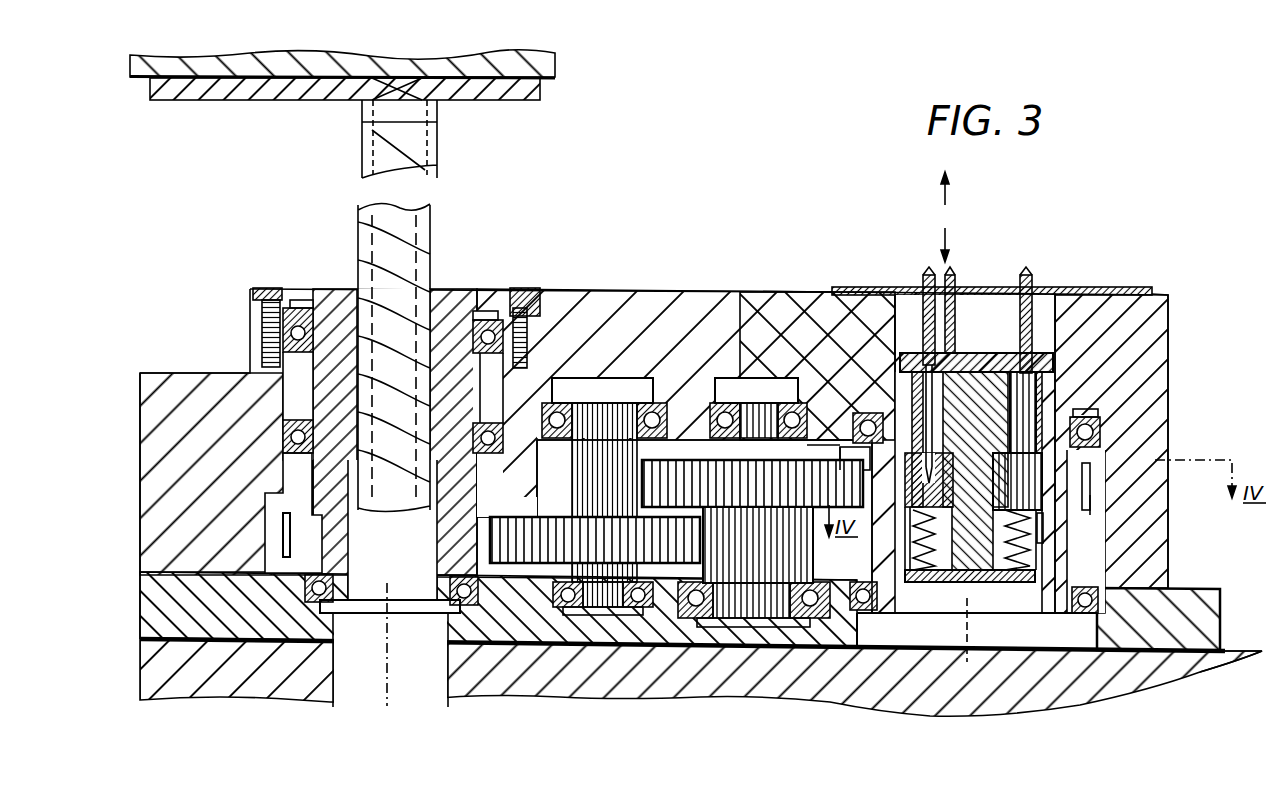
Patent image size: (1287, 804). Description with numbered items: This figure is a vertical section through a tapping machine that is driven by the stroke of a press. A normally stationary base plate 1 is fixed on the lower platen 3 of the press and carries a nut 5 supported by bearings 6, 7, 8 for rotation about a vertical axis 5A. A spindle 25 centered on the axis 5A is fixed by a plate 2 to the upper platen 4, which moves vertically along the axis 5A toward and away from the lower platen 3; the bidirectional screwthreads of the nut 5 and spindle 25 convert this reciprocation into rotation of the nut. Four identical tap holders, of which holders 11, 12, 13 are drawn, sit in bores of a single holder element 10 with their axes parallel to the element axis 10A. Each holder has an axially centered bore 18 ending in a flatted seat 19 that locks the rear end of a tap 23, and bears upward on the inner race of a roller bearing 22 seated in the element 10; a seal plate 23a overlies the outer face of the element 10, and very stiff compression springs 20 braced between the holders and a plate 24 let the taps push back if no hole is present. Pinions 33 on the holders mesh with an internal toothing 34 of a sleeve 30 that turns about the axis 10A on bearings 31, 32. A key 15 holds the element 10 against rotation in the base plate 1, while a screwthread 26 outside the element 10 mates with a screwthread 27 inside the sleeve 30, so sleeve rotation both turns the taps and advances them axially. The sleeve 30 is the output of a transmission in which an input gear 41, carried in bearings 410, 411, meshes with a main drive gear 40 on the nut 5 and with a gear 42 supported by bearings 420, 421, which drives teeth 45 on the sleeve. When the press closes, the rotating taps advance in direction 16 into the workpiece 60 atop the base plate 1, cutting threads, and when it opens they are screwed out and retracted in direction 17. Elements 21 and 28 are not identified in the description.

The base plate 1 is at (1150, 337).
The plate 2 is at (527, 93).
The lower platen 3 is at (1145, 670).
The upper platen 4 is at (548, 68).
The nut 5 is at (447, 540).
The vertical axis 5A is at (391, 690).
The bearing 6 is at (295, 322).
The bearing 7 is at (283, 438).
The bearing 8 is at (307, 597).
The holder element 10 is at (1063, 400).
The axis of holder element 10A is at (970, 632).
The tap holder 11 is at (898, 360).
The tap holder 12 is at (960, 350).
The tap holder 13 is at (1055, 370).
The key 15 is at (1170, 300).
The outward direction 16 is at (952, 197).
The retraction direction 17 is at (952, 232).
The axially centered bore 18 is at (912, 330).
The flatted seat 19 is at (963, 580).
The compression spring 20 is at (927, 575).
The ring 21 is at (1107, 480).
The roller bearing 22 is at (1103, 418).
The tap 23 is at (1028, 300).
The seal plate 23a is at (935, 378).
The plate 24 is at (915, 590).
The spindle 25 is at (440, 137).
The screwthread 26 is at (855, 418).
The screwthread 27 is at (812, 444).
The cylinder wall 28 is at (1045, 590).
The sleeve 30 is at (1065, 570).
The bearing 31 is at (1100, 454).
The bearing 32 is at (1150, 650).
The pinion 33 is at (857, 605).
The internal toothing 34 is at (1085, 530).
The main drive gear 40 is at (470, 540).
The input gear 41 is at (603, 550).
The gear 42 is at (740, 597).
The teeth 45 is at (840, 452).
The workpiece 60 is at (972, 286).
The bearing 410 is at (633, 597).
The bearing 411 is at (557, 414).
The bearing 420 is at (787, 597).
The bearing 421 is at (697, 460).